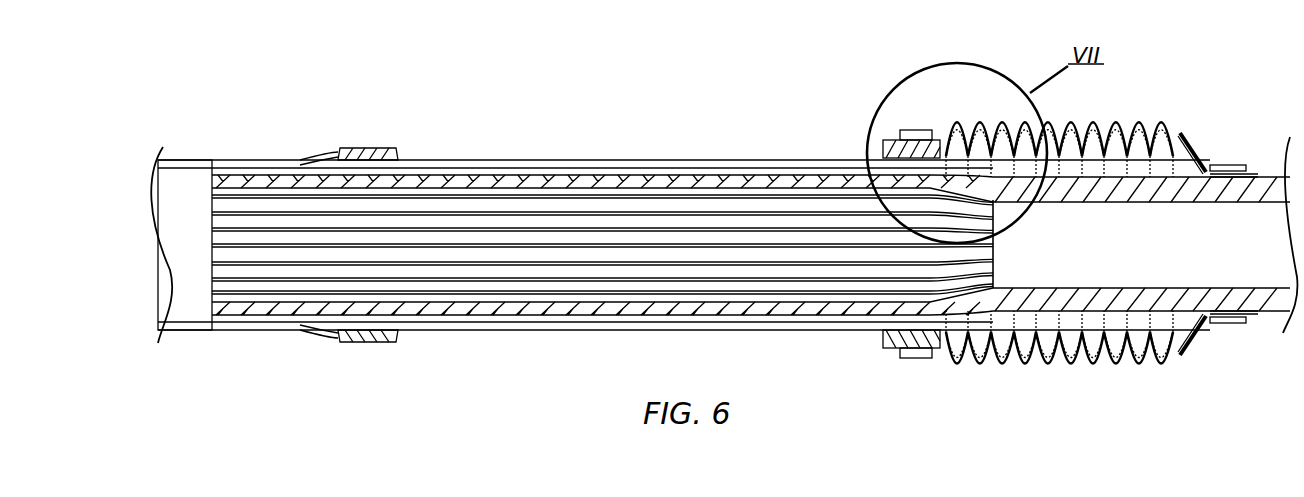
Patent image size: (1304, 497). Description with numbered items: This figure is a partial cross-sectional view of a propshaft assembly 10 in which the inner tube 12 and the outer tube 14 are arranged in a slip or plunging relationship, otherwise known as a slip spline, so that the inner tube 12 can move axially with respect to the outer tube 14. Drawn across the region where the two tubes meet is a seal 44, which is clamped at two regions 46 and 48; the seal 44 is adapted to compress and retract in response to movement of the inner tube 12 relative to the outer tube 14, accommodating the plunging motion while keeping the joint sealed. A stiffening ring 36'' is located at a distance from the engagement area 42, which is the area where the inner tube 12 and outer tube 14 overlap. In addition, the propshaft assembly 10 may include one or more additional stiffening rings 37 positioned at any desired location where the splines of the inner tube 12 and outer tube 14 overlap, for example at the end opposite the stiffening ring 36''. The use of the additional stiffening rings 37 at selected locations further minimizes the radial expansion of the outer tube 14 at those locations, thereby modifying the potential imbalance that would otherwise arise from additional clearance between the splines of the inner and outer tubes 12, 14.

The propshaft assembly 10 is at (213, 101).
The inner tube 12 is at (170, 209).
The outer tube 14 is at (542, 150).
The additional stiffening ring 37 is at (362, 140).
The stiffening ring 36'' is at (1039, 216).
The clamping region 48 is at (912, 123).
The engagement area 42 is at (1054, 165).
The seal 44 is at (1140, 123).
The clamping region 46 is at (1234, 135).